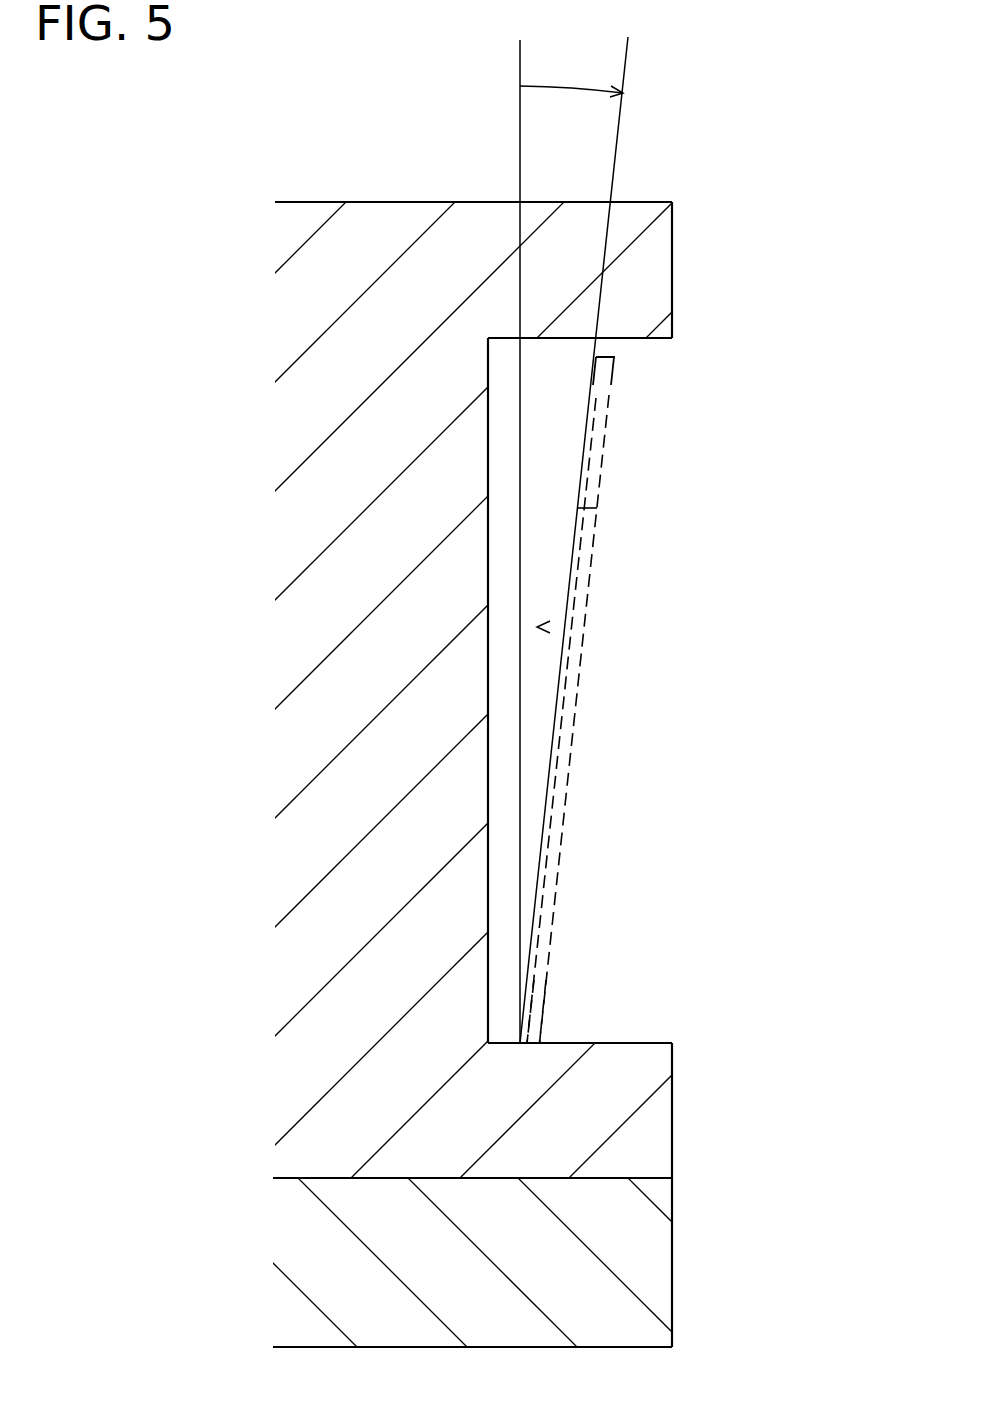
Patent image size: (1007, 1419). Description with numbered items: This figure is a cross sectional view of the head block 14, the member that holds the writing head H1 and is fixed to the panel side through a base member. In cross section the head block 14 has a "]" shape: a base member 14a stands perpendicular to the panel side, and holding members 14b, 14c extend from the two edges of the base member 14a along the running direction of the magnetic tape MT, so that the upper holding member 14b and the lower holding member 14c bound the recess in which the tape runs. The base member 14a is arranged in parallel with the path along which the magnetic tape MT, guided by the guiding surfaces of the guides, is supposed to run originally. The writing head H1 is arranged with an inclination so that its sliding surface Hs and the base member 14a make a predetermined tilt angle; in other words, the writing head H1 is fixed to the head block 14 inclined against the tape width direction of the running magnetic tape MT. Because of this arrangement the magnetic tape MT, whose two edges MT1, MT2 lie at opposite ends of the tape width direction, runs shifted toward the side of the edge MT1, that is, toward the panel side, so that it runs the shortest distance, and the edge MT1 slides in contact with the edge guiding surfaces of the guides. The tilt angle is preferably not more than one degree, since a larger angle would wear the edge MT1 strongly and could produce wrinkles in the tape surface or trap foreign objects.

The head block 14 is at (335, 158).
The base member 14a is at (403, 726).
The holding member 14b is at (633, 255).
The holding member 14c is at (605, 1103).
The magnetic tape MT is at (642, 455).
The edge MT1 is at (558, 1033).
The edge MT2 is at (647, 359).
The sliding surface Hs is at (597, 508).
The writing head H1 is at (537, 627).